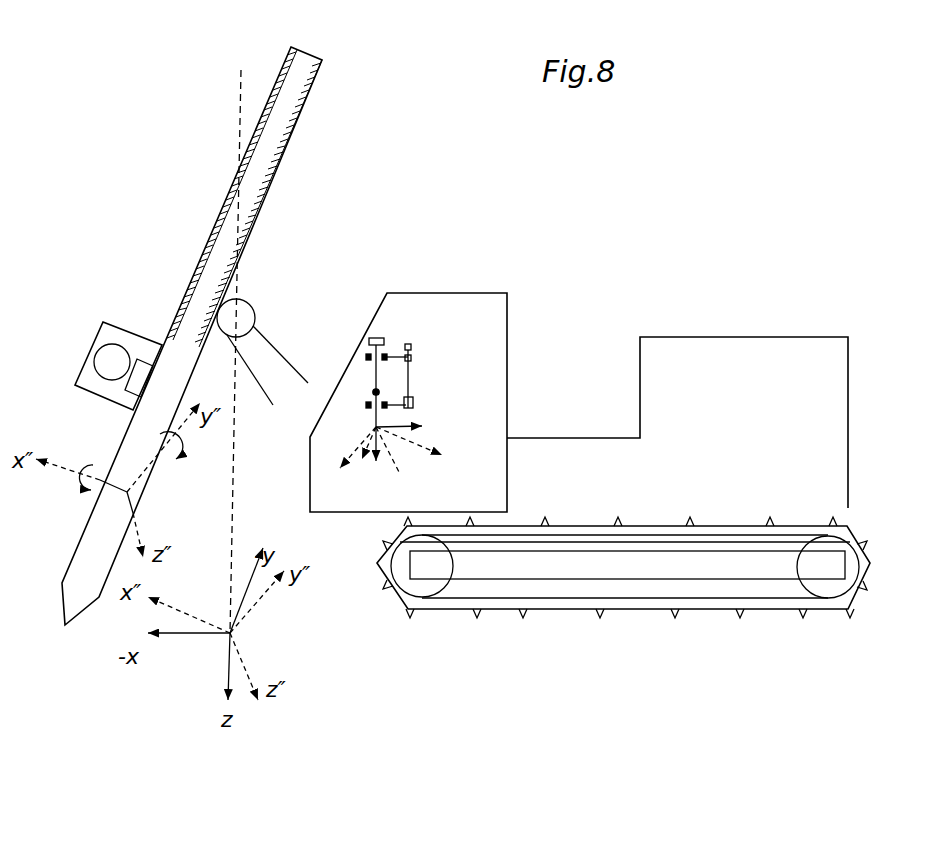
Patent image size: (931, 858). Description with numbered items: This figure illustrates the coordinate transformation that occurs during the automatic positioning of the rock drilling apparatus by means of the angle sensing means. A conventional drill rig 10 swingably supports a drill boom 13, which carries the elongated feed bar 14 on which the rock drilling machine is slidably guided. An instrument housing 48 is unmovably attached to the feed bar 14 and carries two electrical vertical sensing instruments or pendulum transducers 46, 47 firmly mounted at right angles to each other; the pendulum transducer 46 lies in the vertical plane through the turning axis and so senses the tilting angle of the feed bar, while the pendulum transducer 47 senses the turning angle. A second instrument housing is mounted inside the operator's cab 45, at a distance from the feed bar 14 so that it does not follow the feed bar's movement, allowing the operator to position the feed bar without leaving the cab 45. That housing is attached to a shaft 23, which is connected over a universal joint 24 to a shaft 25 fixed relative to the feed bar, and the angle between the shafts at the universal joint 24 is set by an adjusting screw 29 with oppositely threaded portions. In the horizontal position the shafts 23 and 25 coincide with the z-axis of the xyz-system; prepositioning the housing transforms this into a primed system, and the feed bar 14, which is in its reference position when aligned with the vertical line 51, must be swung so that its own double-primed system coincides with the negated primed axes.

The drill rig 10 is at (632, 610).
The drill boom 13 is at (275, 345).
The feed bar 14 is at (258, 212).
The shaft 23 is at (376, 427).
The universal joint 24 is at (376, 392).
The shaft 25 is at (375, 378).
The adjusting screw 29 is at (411, 347).
The cab 45 is at (507, 337).
The pendulum transducer 46 is at (100, 358).
The pendulum transducer 47 is at (148, 341).
The instrument housing 48 is at (115, 323).
The vertical line 51 is at (241, 141).